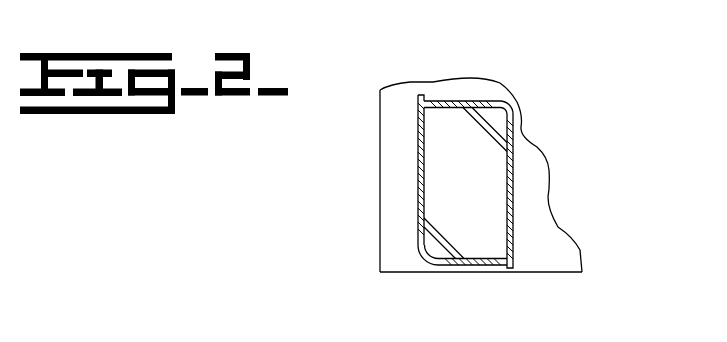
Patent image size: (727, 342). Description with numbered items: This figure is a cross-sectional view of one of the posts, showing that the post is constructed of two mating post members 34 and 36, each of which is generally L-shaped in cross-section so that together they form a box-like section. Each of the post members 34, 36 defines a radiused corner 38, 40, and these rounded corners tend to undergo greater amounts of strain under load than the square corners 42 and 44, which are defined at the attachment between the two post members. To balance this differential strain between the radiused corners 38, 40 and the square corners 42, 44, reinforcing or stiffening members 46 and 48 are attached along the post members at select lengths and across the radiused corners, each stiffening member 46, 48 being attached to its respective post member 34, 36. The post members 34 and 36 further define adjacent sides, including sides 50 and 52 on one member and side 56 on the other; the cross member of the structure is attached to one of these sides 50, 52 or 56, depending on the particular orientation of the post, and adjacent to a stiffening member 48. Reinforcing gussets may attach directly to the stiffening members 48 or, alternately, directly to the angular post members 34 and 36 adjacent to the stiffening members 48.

The post member 34 is at (515, 210).
The post member 36 is at (418, 133).
The radiused corner 38 is at (506, 109).
The radiused corner 40 is at (423, 260).
The square corner 42 is at (538, 273).
The square corner 44 is at (419, 97).
The stiffening member 46 is at (486, 137).
The stiffening member 48 is at (438, 235).
The side 50 is at (516, 160).
The side 52 is at (461, 102).
The side 56 is at (465, 265).